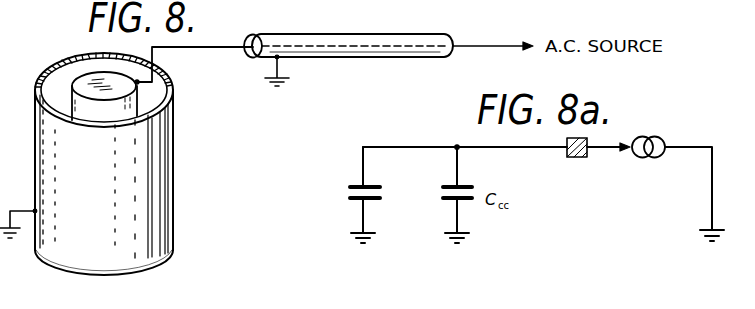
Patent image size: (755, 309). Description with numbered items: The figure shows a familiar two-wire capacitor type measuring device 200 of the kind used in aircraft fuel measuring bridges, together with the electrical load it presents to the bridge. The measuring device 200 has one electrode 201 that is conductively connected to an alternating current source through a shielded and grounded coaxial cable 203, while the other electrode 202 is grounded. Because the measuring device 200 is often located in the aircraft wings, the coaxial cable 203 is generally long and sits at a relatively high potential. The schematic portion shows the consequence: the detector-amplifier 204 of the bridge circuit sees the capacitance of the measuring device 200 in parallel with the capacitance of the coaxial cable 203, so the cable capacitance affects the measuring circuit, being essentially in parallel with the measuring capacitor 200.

In FIG. 8, the two-wire capacitor type measuring device 200 is at (175, 185).
In FIG. 8A, the two-wire capacitor type measuring device 200 is at (360, 185).
In FIG. 8, the electrode 201 is at (137, 98).
In FIG. 8, the other electrode 202 is at (138, 258).
In FIG. 8, the coaxial cable 203 is at (417, 42).
In FIG. 8A, the detector-amplifier 204 is at (588, 141).